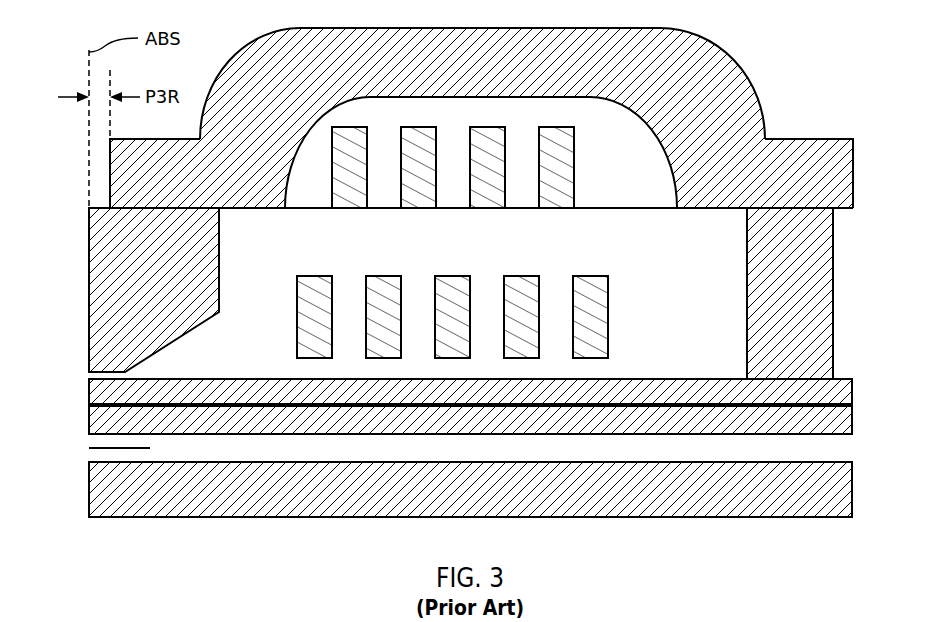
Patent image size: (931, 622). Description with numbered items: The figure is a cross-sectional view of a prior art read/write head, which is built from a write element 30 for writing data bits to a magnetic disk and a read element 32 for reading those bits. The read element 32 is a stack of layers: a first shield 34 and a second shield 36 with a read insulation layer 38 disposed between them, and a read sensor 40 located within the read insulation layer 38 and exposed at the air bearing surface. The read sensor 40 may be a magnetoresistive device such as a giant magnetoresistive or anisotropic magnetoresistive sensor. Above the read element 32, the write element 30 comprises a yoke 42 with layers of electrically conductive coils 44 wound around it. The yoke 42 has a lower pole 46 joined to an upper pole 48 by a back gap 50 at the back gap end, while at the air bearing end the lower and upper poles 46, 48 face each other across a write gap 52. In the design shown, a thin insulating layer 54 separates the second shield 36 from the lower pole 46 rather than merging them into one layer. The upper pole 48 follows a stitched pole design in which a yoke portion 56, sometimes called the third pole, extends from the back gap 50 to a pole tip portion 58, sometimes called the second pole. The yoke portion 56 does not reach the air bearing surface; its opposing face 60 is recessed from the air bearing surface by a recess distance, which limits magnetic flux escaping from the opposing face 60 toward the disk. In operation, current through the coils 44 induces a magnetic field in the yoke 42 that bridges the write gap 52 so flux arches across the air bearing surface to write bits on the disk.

The write element 30 is at (49, 20).
The read element 32 is at (77, 407).
The first shield 34 is at (670, 517).
The second shield 36 is at (498, 435).
The read insulation layer 38 is at (792, 456).
The read sensor 40 is at (145, 449).
The yoke 42 is at (796, 114).
The electrically conductive coils 44 is at (586, 171).
The lower pole 46 is at (843, 378).
The upper pole 48 is at (728, 62).
The back gap 50 is at (838, 292).
The write gap 52 is at (80, 375).
The thin insulating layer 54 is at (852, 405).
The yoke portion 56 is at (228, 72).
The pole tip portion 58 is at (89, 287).
The opposing face 60 is at (104, 175).